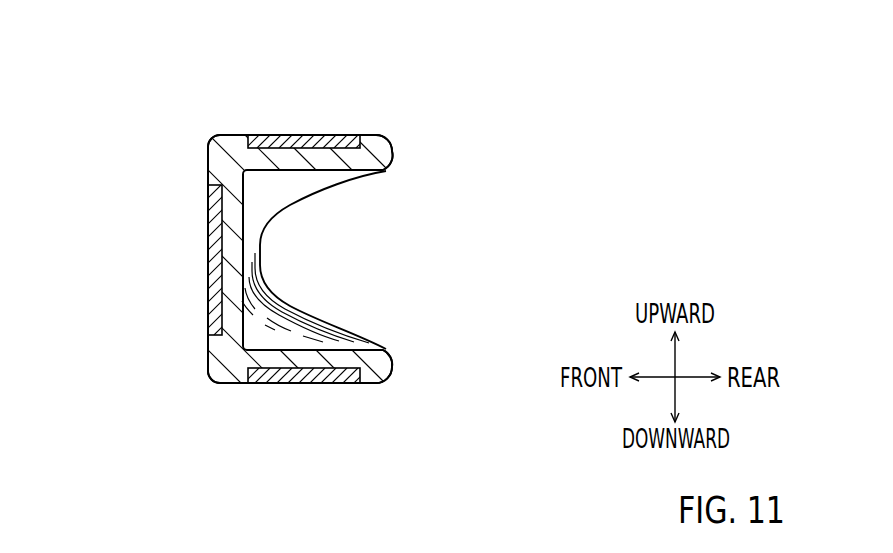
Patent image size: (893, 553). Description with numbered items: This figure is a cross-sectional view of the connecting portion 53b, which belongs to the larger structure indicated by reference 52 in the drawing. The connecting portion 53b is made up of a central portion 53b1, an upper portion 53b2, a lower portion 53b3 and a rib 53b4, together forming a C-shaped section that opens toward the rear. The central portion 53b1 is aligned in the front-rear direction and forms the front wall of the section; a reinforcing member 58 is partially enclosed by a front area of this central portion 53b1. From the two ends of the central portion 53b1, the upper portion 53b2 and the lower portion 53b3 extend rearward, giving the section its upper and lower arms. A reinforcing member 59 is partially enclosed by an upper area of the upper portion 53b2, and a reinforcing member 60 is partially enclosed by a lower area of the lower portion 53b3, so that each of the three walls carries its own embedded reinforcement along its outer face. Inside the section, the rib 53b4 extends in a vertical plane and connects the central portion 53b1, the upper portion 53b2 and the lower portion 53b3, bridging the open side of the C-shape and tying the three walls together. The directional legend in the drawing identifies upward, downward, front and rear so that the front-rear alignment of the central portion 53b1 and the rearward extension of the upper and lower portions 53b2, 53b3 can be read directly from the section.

The holder assembly 52 is at (120, 90).
The connecting portion 53b is at (213, 137).
The central portion 53b1 is at (213, 158).
The upper portion 53b2 is at (393, 152).
The lower portion 53b3 is at (391, 365).
The rib 53b4 is at (273, 200).
The reinforcing member 58 is at (214, 260).
The reinforcing member 59 is at (302, 136).
The reinforcing member 60 is at (305, 384).